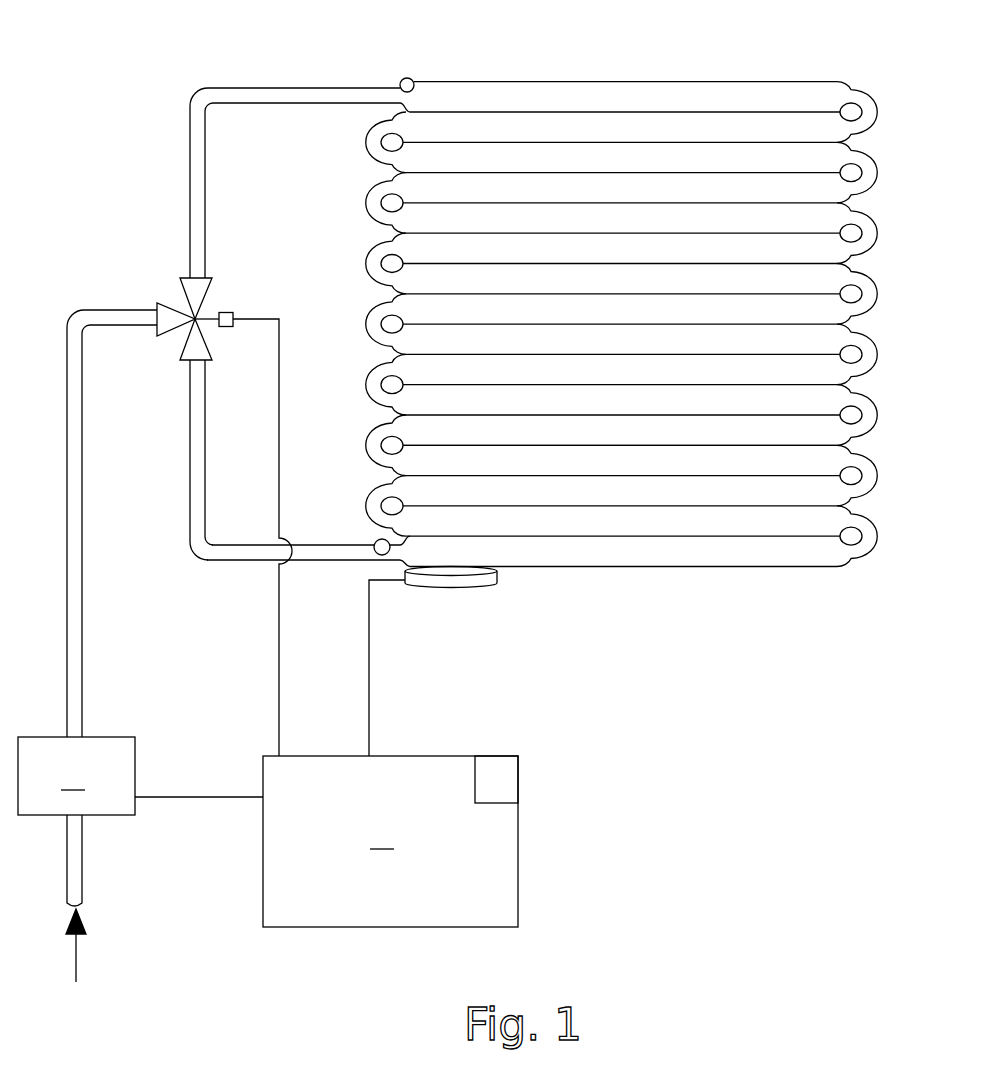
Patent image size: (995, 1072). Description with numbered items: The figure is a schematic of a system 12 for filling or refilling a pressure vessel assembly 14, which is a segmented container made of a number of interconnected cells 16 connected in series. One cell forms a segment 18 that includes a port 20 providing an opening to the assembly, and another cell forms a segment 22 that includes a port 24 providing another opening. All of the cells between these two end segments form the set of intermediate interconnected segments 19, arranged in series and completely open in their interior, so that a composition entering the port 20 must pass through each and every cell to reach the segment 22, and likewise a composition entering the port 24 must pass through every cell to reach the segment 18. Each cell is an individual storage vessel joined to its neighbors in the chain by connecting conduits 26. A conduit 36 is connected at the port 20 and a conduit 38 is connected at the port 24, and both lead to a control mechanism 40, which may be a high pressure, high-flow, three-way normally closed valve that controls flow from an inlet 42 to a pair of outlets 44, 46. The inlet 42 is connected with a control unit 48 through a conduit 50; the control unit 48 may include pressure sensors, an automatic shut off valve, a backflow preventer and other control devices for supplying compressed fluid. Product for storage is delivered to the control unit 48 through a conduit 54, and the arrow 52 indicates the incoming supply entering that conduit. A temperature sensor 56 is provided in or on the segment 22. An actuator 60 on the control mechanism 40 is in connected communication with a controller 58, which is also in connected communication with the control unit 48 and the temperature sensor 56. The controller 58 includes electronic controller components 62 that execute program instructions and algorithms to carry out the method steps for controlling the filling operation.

The system 12 is at (137, 113).
The pressure vessel assembly 14 is at (562, 78).
The cells 16 is at (755, 189).
The segment 18 is at (472, 90).
The intermediate interconnected segments 19 is at (665, 428).
The port 20 is at (410, 78).
The segment 22 is at (637, 555).
The port 24 is at (372, 540).
The connecting conduits 26 is at (370, 320).
The conduit 36 is at (252, 88).
The conduit 38 is at (321, 560).
The control mechanism 40 is at (215, 292).
The inlet 42 is at (150, 308).
The outlet 44 is at (187, 277).
The outlet 46 is at (207, 360).
The control unit 48 is at (76, 776).
The conduit 50 is at (84, 540).
The fluid flow 52 is at (75, 950).
The conduit 54 is at (83, 860).
The temperature sensor 56 is at (452, 590).
The controller 58 is at (326, 841).
The actuator 60 is at (228, 327).
The electronic controller components 62 is at (507, 790).